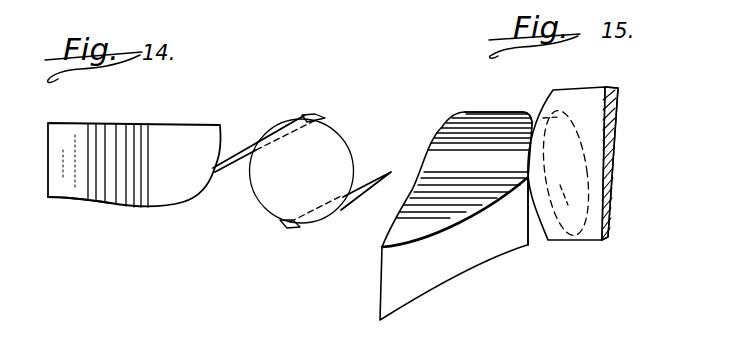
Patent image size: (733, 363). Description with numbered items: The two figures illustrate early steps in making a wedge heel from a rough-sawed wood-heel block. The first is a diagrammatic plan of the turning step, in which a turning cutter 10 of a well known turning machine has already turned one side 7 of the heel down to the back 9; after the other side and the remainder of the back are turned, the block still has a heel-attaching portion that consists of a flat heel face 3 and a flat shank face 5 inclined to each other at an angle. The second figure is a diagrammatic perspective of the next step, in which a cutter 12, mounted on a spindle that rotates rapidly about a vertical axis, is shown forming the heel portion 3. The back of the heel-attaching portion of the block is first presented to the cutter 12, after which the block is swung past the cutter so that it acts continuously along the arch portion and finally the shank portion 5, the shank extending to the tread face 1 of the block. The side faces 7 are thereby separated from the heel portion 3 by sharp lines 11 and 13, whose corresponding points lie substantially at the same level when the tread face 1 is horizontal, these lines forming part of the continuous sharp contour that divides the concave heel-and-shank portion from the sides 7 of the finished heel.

In FIG. 15, the tread face 1 is at (432, 142).
In FIG. 14, the heel portion 3 is at (180, 137).
In FIG. 15, the heel portion 3 is at (533, 223).
In FIG. 14, the shank portion 5 is at (93, 172).
In FIG. 15, the shank portion 5 is at (472, 255).
In FIG. 14, the side portions 7 is at (128, 121).
In FIG. 15, the side portions 7 is at (463, 158).
In FIG. 14, the back 9 is at (212, 173).
In FIG. 15, the back 9 is at (477, 112).
In FIG. 14, the turning cutter 10 is at (328, 147).
In FIG. 15, the sharp line 11 is at (525, 112).
In FIG. 15, the cutter 12 is at (592, 195).
In FIG. 15, the sharp line 13 is at (618, 144).